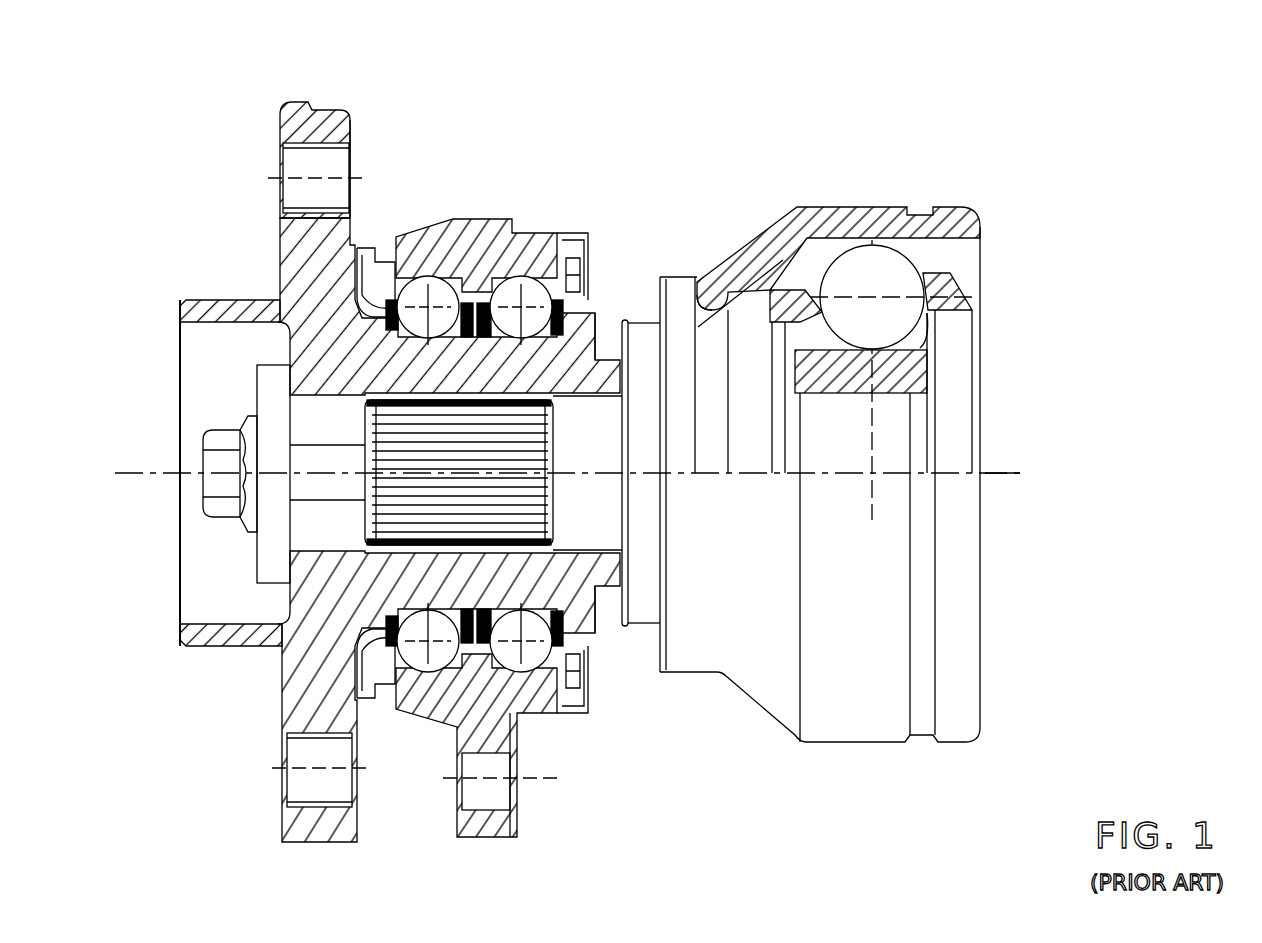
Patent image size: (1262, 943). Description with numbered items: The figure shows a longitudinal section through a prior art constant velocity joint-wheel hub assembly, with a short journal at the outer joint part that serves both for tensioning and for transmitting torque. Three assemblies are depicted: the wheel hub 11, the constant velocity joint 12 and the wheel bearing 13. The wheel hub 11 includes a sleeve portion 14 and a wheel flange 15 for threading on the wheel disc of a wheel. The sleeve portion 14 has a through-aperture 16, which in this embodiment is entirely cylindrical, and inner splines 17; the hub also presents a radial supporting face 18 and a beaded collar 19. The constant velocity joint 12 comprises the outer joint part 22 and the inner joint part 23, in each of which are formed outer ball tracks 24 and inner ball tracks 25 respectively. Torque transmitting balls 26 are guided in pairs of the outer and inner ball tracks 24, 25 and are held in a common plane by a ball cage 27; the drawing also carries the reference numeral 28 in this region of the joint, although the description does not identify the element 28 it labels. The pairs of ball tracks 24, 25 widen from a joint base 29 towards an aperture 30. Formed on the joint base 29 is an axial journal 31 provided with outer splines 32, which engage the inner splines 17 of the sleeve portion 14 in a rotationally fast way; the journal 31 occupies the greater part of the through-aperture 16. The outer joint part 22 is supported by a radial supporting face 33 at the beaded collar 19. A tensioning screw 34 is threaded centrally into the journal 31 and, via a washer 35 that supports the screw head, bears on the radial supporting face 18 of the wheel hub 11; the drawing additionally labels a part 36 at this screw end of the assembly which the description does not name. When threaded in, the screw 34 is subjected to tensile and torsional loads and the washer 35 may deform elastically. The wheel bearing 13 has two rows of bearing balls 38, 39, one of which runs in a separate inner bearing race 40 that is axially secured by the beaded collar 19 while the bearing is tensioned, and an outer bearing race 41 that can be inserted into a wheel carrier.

The wheel hub 11 is at (583, 446).
The constant velocity joint 12 is at (718, 396).
The wheel bearing 13 is at (484, 451).
The sleeve portion 14 is at (392, 250).
The wheel flange 15 is at (358, 213).
The through-aperture 16 is at (419, 472).
The inner splines 17 is at (419, 472).
The radial supporting face 18 is at (285, 330).
The beaded collar 19 is at (606, 322).
The outer joint part 22 is at (849, 445).
The inner joint part 23 is at (907, 380).
The outer ball tracks 24 is at (950, 258).
The inner ball tracks 25 is at (923, 358).
The torque transmitting balls 26 is at (858, 277).
The ball cage 27 is at (735, 255).
The inner ball track 28 is at (788, 290).
The joint base 29 is at (682, 288).
The aperture 30 is at (990, 280).
The axial journal 31 is at (597, 457).
The outer splines 32 is at (550, 423).
The radial supporting face 33 is at (625, 322).
The tensioning screw 34 is at (313, 462).
The washer 35 is at (256, 420).
The nut 36 is at (223, 470).
The bearing balls 38 is at (431, 292).
The bearing balls 39 is at (527, 290).
The inner bearing race 40 is at (581, 258).
The outer bearing race 41 is at (474, 227).